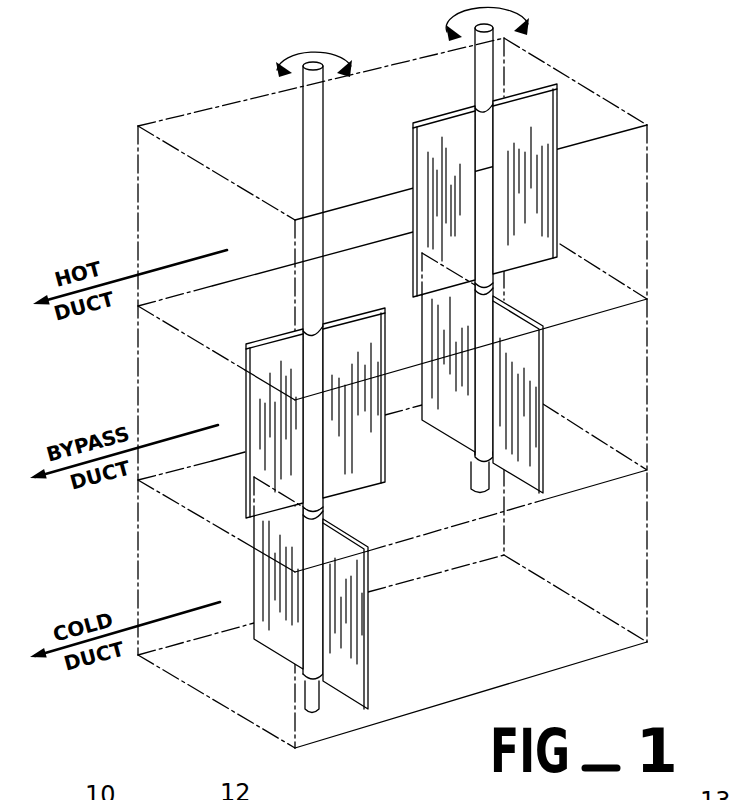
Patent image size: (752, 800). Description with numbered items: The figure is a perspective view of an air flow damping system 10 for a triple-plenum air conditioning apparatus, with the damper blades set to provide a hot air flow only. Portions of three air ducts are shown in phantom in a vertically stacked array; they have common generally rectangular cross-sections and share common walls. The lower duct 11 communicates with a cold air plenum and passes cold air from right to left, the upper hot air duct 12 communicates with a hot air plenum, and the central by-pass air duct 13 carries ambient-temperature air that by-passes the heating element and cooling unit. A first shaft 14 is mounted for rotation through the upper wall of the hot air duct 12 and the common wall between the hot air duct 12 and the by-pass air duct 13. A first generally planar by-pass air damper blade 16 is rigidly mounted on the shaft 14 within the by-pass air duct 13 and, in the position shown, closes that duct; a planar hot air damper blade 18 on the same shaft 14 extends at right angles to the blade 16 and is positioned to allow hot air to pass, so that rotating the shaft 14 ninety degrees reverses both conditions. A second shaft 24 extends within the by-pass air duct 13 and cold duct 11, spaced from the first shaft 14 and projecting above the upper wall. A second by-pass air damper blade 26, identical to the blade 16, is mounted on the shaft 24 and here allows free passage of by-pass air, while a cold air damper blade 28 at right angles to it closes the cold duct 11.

The air flow damping system 10 is at (248, 82).
The lower duct 11 is at (583, 665).
The hot air duct 12 is at (648, 212).
The by-pass air duct 13 is at (648, 407).
The first shaft 14 is at (475, 65).
The first by-pass air damper blade 16 is at (545, 374).
The hot air damper blade 18 is at (427, 162).
The second shaft 24 is at (303, 158).
The second by-pass air damper blade 26 is at (246, 420).
The cold air damper blade 28 is at (370, 627).